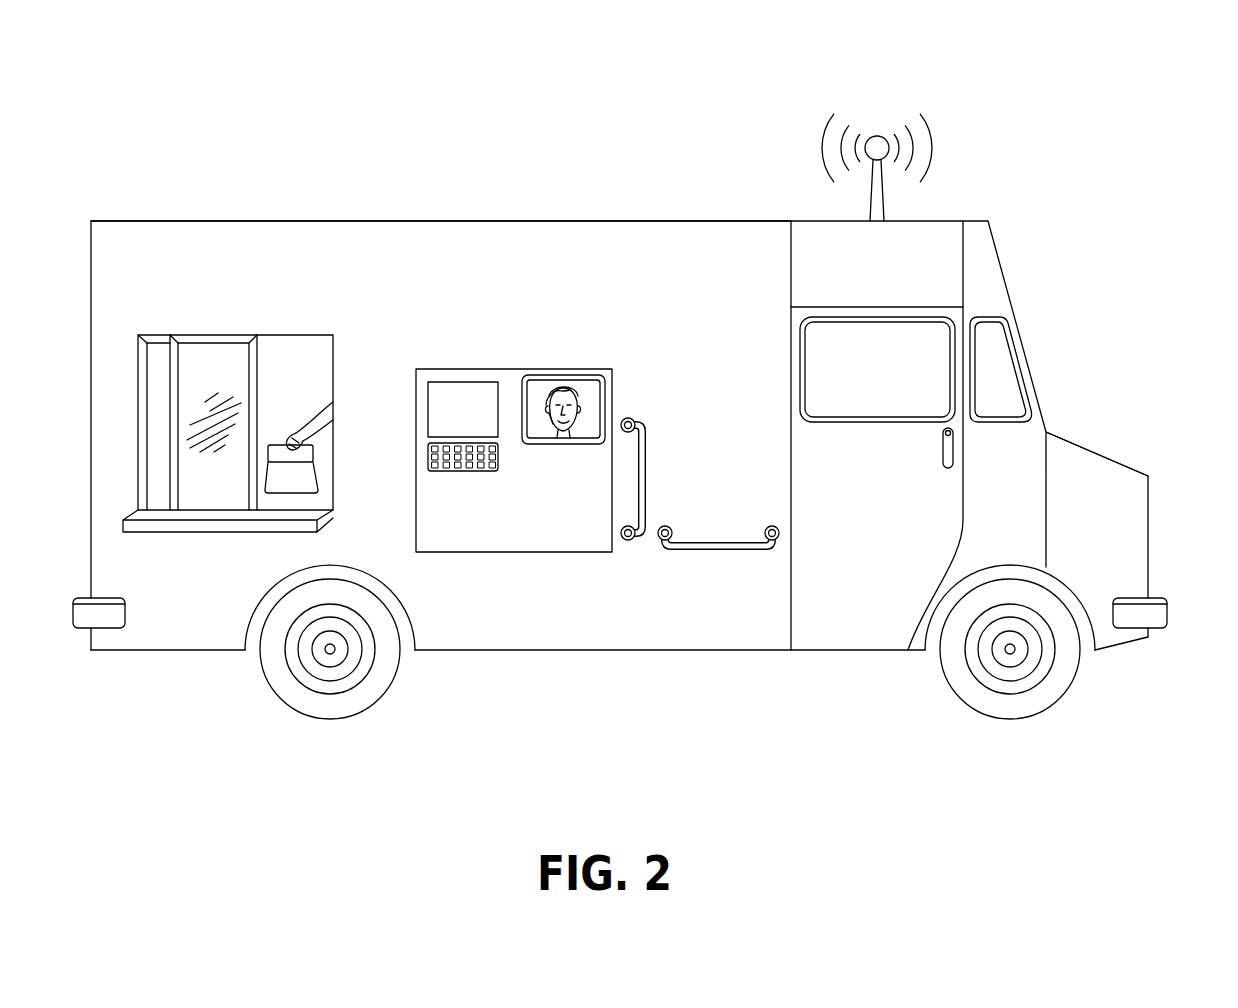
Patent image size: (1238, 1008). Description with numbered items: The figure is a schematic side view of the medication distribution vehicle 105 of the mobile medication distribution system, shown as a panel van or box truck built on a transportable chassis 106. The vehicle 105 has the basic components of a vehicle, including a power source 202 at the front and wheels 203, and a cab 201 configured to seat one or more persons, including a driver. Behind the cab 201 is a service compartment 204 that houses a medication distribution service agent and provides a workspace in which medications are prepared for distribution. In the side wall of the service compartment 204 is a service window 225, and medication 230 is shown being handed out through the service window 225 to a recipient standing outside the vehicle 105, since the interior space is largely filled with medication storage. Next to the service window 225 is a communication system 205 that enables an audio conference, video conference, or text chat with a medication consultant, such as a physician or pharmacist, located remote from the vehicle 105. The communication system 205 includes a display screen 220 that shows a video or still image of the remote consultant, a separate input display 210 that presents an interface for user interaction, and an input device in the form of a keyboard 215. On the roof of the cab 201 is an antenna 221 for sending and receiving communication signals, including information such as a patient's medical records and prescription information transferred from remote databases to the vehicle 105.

The vehicle 105 is at (616, 122).
The transportable chassis 106 is at (584, 664).
The cab 201 is at (897, 345).
The power source 202 is at (1102, 478).
The wheels 203 is at (1012, 706).
The service compartment 204 is at (300, 245).
The communication system 205 is at (543, 368).
The input display 210 is at (460, 381).
The keyboard 215 is at (425, 455).
The display screen 220 is at (570, 372).
The antenna 221 is at (886, 206).
The service window 225 is at (205, 333).
The medication 230 is at (296, 475).